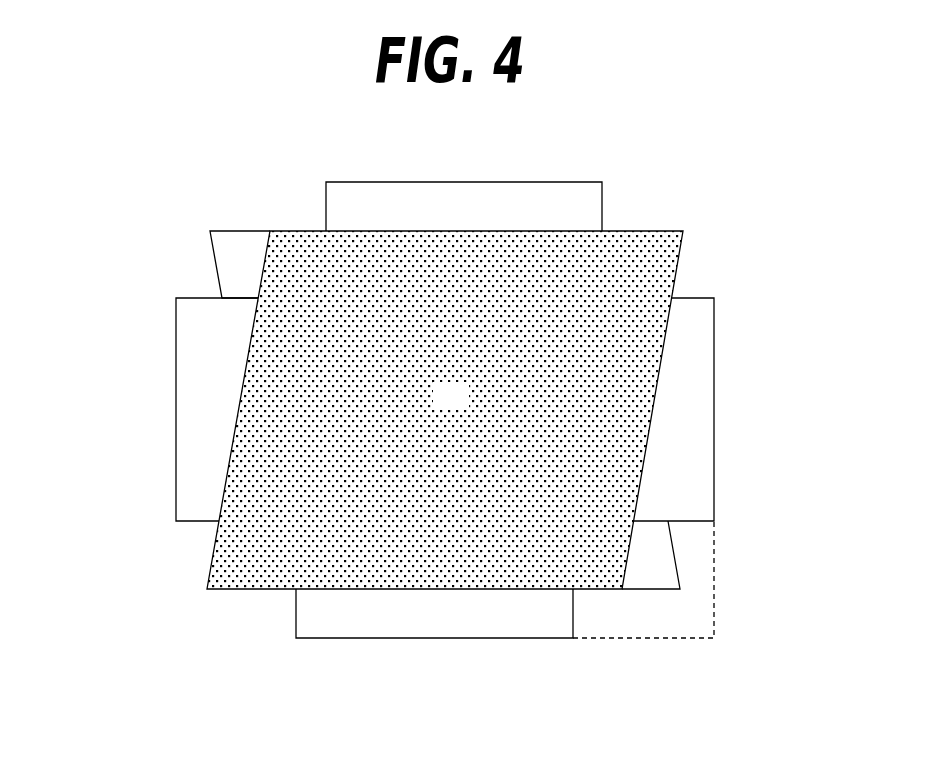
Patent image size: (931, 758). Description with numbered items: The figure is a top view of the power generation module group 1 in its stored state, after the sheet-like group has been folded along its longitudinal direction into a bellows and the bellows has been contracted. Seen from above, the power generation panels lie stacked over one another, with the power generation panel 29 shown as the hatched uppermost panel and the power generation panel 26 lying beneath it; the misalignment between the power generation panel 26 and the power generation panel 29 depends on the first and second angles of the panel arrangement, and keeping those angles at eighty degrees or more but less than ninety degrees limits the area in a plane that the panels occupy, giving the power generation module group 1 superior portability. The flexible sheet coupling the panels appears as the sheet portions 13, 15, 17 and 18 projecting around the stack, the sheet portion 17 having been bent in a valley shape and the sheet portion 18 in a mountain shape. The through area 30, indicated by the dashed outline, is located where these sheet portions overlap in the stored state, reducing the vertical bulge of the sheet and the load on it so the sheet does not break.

The power generation module group 1 is at (729, 109).
The sheet portion 13 is at (428, 628).
The sheet portion 15 is at (459, 192).
The sheet portion 17 is at (686, 450).
The sheet portion 18 is at (203, 449).
The power generation panel 26 is at (241, 243).
The power generation panel 29 is at (435, 408).
The through area 30 is at (716, 585).